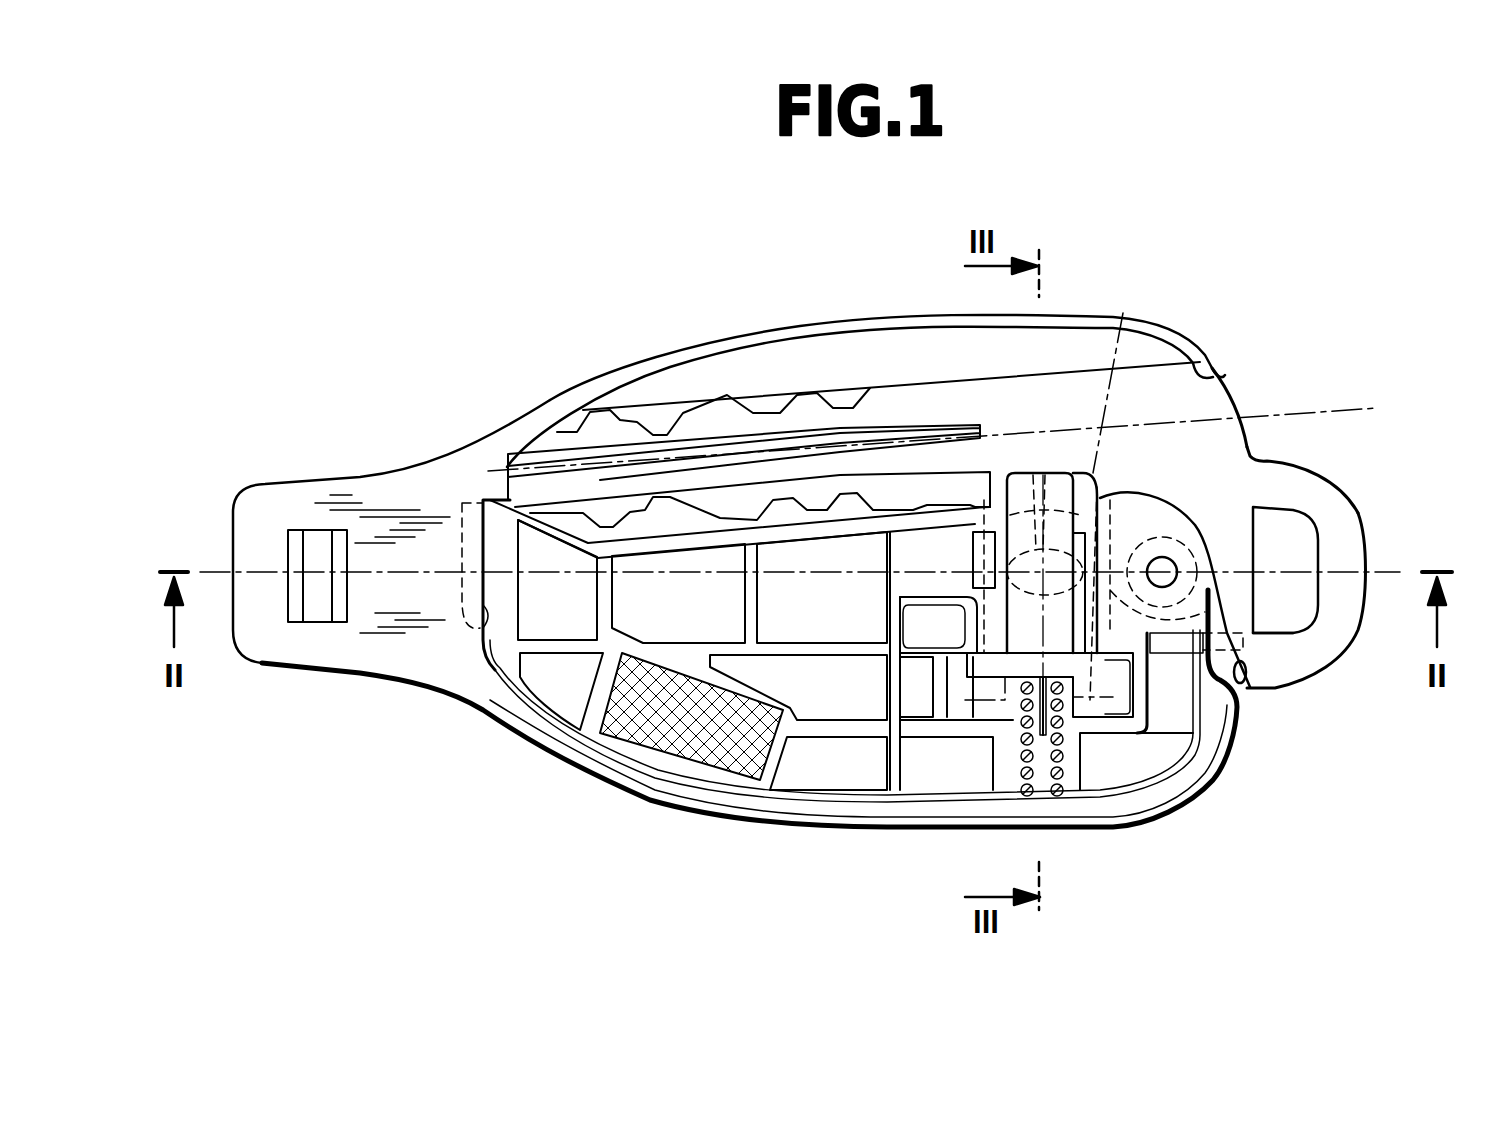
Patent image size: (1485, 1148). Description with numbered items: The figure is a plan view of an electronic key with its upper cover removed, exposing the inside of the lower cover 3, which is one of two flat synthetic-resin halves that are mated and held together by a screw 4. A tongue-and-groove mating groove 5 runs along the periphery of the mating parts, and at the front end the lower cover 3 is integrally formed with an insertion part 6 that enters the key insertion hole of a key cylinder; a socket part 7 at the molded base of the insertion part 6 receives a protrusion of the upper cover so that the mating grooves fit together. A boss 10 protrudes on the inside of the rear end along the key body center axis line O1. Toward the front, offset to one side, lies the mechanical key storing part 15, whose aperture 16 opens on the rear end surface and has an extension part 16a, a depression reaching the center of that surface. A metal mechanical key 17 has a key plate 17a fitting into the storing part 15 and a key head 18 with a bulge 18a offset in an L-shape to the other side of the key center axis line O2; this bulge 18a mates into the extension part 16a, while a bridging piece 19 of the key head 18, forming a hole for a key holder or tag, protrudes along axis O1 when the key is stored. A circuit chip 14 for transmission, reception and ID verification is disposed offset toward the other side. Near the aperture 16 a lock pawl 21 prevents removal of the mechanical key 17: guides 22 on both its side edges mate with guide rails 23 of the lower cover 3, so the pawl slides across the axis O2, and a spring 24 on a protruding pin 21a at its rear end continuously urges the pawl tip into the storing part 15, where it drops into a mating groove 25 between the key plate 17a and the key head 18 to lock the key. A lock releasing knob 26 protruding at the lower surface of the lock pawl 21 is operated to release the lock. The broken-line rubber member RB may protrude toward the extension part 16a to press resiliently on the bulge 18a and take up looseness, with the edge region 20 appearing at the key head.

The lower cover 3 is at (815, 325).
The screw 4 is at (1167, 567).
The tongue-and-groove mating groove 5 is at (875, 340).
The insertion part 6 is at (372, 478).
The socket part 7 is at (468, 625).
The boss 10 is at (1170, 530).
The circuit chip 14 is at (665, 727).
The mechanical key storing part 15 is at (920, 385).
The aperture 16 is at (1223, 373).
The extension part 16a is at (1245, 680).
The mechanical key 17 is at (652, 422).
The key plate 17a is at (735, 385).
The key head 18 is at (1242, 397).
The bulge 18a is at (1243, 560).
The bridging piece 19 is at (1352, 500).
The ring edge 20 is at (1290, 612).
The lock pawl 21 is at (1063, 477).
The protruding pin 21a is at (1045, 722).
The guides 22 is at (1087, 500).
The guide rails 23 is at (987, 535).
The spring 24 is at (1060, 760).
The mating groove 25 is at (1005, 475).
The lock releasing knob 26 is at (1040, 470).
The rubber member RB is at (1183, 643).
The key body center axis line O1 is at (1385, 572).
The key center axis line O2 is at (1340, 408).